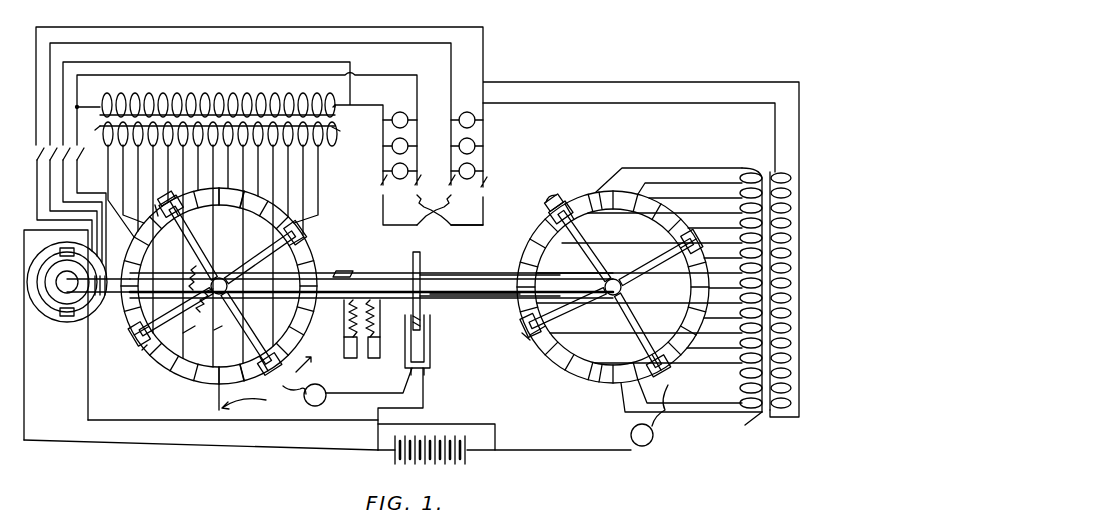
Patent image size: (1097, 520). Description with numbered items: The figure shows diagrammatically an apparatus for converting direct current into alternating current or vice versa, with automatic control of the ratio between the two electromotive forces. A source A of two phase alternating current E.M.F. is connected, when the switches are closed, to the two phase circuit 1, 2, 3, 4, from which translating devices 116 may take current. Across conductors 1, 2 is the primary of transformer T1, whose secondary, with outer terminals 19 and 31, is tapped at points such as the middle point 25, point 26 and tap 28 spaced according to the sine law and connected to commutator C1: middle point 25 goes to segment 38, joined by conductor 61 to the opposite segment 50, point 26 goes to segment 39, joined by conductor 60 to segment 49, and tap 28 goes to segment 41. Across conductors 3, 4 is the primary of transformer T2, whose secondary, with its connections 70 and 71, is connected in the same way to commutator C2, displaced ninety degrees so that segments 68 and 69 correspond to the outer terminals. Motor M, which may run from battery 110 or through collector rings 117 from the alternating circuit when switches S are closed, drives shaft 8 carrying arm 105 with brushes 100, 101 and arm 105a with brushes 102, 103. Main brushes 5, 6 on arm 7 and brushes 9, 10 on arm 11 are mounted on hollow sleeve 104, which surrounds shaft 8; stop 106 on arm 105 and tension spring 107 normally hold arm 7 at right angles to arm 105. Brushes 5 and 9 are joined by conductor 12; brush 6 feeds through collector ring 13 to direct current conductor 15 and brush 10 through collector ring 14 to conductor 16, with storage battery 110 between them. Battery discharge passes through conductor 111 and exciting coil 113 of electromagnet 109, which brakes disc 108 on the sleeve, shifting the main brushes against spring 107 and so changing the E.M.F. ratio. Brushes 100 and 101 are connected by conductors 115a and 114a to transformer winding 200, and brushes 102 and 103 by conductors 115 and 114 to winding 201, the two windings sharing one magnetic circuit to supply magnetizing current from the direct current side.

The conductor of two phase circuit 1 is at (378, 80).
The conductor of two phase circuit 2 is at (365, 106).
The conductor of two phase circuit 3 is at (618, 84).
The conductor of two phase circuit 4 is at (617, 105).
The main brush 5 is at (150, 213).
The main brush 6 is at (303, 363).
The arm 7 is at (245, 350).
The shaft 8 is at (106, 293).
The main brush 9 is at (524, 226).
The main brush 10 is at (680, 374).
The arm 11 is at (567, 200).
The conductor 12 is at (378, 275).
The collector ring 13 is at (321, 391).
The collector ring 14 is at (649, 420).
The direct current conductor 15 is at (244, 448).
The direct current conductor 16 is at (540, 452).
The secondary winding terminal 19 is at (340, 132).
The middle point of secondary winding 25 is at (232, 146).
The secondary winding point 26 is at (195, 146).
The tap 28 is at (139, 146).
The secondary winding terminal 31 is at (96, 128).
The commutator segment 38 is at (227, 199).
The commutator segment 39 is at (204, 197).
The commutator segment 41 is at (158, 216).
The commutator segment 49 is at (203, 375).
The commutator segment 50 is at (227, 373).
The conductor 60 is at (187, 336).
The conductor 61 is at (211, 336).
The commutator segment 68 is at (609, 200).
The commutator segment 69 is at (610, 377).
The conductor 70 is at (755, 172).
The conductor 71 is at (745, 425).
The brush 100 is at (145, 352).
The brush 101 is at (278, 212).
The brush 102 is at (528, 360).
The brush 103 is at (698, 225).
The hollow shaft or sleeve 104 is at (335, 300).
The arm 105 is at (138, 334).
The arm 105a is at (522, 333).
The stop 106 is at (213, 287).
The tension spring 107 is at (196, 266).
The disc 108 is at (421, 262).
The electromagnet 109 is at (431, 339).
The storage battery 110 is at (467, 452).
The conductor 111 is at (360, 398).
The exciting coil 113 is at (425, 378).
The conductor 114 is at (455, 275).
The conductor 114a is at (340, 270).
The conductor 115 is at (455, 298).
The conductor 115a is at (306, 366).
The translating devices 116 is at (409, 142).
The collector rings 117 is at (94, 318).
The transformer winding 200 is at (346, 340).
The transformer winding 201 is at (376, 334).
The source of two phase alternating current E.M.F. A is at (450, 219).
The motor M is at (65, 335).
The switches S is at (70, 146).
The transformer T1 is at (207, 119).
The transformer T2 is at (765, 304).
The commutator C1 is at (190, 386).
The commutator C2 is at (575, 390).